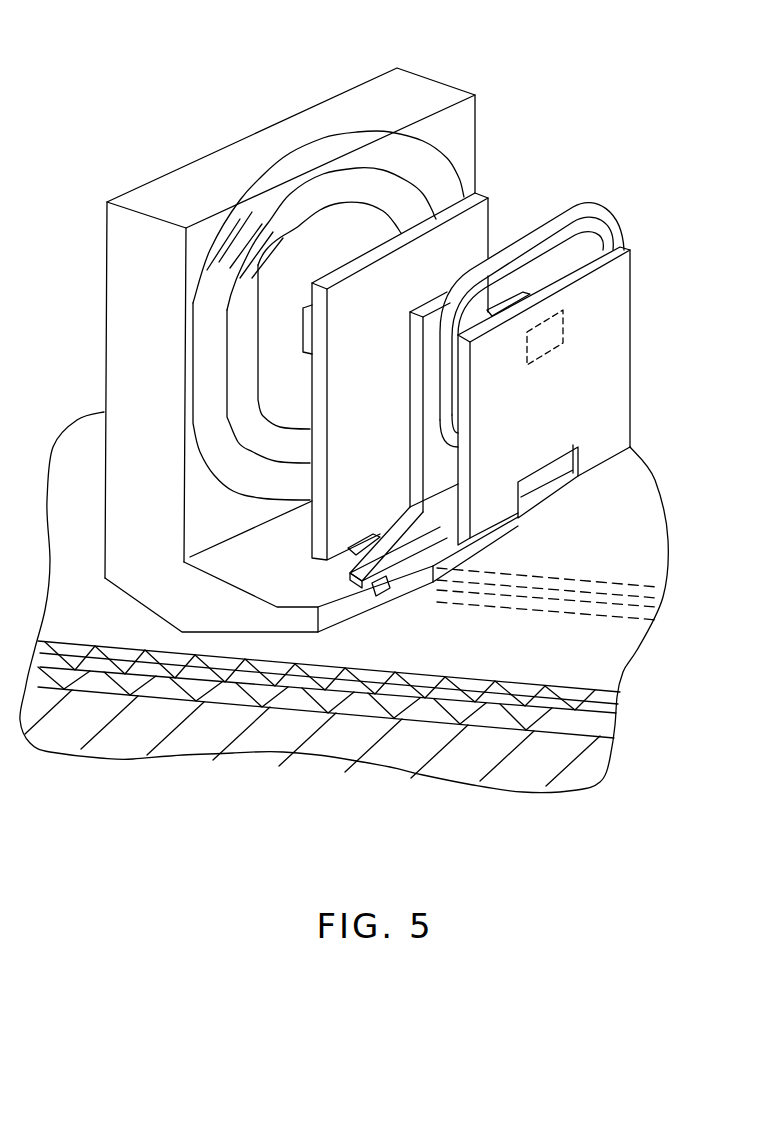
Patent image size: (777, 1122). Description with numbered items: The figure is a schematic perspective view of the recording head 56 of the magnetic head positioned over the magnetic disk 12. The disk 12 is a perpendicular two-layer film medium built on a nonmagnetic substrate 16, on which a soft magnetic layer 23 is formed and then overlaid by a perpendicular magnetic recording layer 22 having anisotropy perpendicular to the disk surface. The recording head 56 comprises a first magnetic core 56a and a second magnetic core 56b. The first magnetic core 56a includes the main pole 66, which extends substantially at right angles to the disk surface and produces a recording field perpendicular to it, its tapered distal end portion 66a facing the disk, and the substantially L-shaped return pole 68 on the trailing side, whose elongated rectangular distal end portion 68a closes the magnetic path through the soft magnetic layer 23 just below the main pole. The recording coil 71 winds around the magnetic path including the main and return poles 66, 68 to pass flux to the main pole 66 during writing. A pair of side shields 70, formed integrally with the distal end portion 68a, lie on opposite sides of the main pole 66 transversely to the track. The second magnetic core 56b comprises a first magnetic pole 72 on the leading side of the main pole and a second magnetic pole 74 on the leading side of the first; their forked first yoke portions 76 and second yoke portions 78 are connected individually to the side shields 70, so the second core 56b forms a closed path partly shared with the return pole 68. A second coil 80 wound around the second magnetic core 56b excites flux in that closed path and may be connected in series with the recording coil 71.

The magnetic disk 12 is at (522, 810).
The substrate 16 is at (598, 766).
The perpendicular magnetic recording layer 22 is at (604, 708).
The soft magnetic layer 23 is at (601, 728).
The recording head 56 is at (552, 164).
The first magnetic core 56a is at (498, 112).
The second magnetic core 56b is at (645, 238).
The main pole 66 is at (483, 212).
The distal end portion 66a is at (432, 586).
The return pole 68 is at (431, 90).
The distal end portion 68a is at (133, 585).
The side shields 70 is at (328, 623).
The recording coil 71 is at (377, 223).
The first magnetic pole 72 is at (410, 394).
The second magnetic pole 74 is at (623, 333).
The first yoke portions 76 is at (350, 576).
The second yoke portions 78 is at (566, 481).
The second coil 80 is at (586, 209).